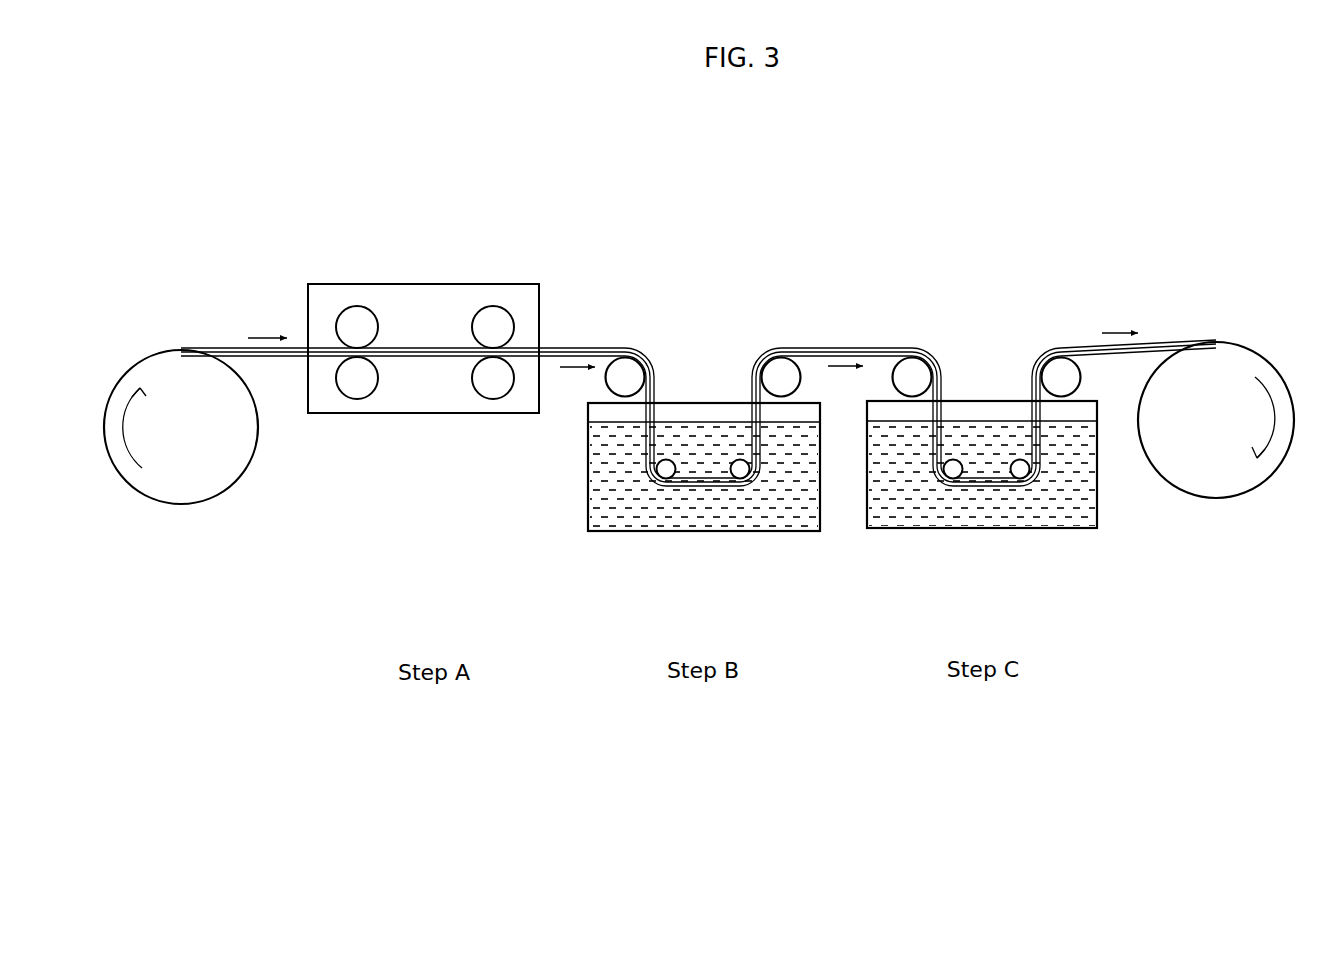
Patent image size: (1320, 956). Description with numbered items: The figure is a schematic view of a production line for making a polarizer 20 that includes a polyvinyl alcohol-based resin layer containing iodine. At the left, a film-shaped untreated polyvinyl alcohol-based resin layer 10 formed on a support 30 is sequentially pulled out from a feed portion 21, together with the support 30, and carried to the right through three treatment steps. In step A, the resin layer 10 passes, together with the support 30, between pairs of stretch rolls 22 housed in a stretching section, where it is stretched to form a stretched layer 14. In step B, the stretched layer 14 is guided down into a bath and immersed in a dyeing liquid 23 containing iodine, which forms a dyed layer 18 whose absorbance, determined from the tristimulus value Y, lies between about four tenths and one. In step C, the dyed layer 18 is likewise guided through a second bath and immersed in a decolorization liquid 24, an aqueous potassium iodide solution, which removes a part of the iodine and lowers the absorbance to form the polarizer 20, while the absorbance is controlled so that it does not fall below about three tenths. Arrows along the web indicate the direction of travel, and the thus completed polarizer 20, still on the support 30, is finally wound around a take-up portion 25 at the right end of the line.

The untreated polyvinyl alcohol-based resin layer 10 is at (230, 348).
The stretched layer 14 is at (581, 347).
The dyed layer 18 is at (843, 345).
The polarizer 20 is at (1157, 342).
The feed portion 21 is at (186, 488).
The stretch rolls 22 is at (355, 320).
The dyeing liquid 23 is at (713, 515).
The decolorization liquid 24 is at (987, 503).
The take-up portion 25 is at (1217, 477).
The support 30 is at (273, 360).